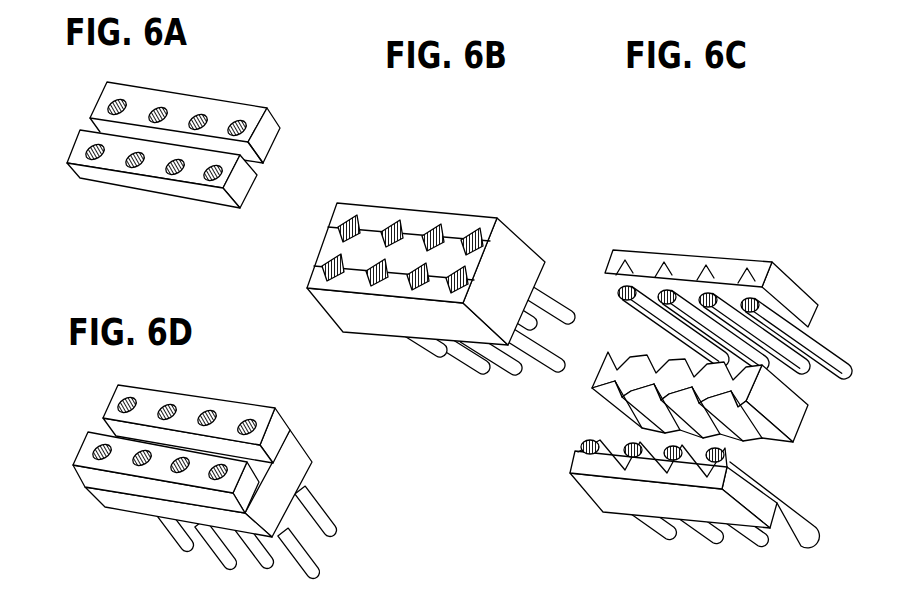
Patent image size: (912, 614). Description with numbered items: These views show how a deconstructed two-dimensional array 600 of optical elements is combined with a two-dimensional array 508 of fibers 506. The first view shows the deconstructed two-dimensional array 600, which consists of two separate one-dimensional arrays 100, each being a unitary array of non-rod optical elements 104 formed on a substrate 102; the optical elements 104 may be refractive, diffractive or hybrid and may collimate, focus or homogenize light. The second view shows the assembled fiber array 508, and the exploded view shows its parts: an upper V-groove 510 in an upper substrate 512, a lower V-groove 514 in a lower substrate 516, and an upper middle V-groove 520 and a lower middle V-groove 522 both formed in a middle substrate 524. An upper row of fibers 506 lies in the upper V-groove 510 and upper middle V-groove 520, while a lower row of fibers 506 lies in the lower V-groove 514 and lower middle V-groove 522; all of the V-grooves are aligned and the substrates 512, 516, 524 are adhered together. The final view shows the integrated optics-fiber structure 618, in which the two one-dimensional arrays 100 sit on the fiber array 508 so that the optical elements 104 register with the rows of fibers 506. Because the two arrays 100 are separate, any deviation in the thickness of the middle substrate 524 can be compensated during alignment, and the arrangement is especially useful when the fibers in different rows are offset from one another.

In FIG. 6A, the one-dimensional array 100 is at (188, 133).
In FIG. 6A, the substrate 102 is at (107, 97).
In FIG. 6A, the non-rod optical elements 104 is at (120, 98).
In FIG. 6A, the deconstructed two-dimensional array 600 is at (190, 133).
In FIG. 6D, the deconstructed two-dimensional array 600 is at (190, 476).
In FIG. 6B, the fibers 506 is at (535, 297).
In FIG. 6C, the fibers 506 is at (825, 358).
In FIG. 6B, the two-dimensional array of fibers 508 is at (415, 262).
In FIG. 6C, the two-dimensional array of fibers 508 is at (702, 378).
In FIG. 6D, the two-dimensional array of fibers 508 is at (300, 427).
In FIG. 6B, the upper V-groove 510 is at (473, 222).
In FIG. 6C, the upper V-groove 510 is at (623, 270).
In FIG. 6B, the upper substrate 512 is at (376, 226).
In FIG. 6C, the upper substrate 512 is at (711, 262).
In FIG. 6B, the lower V-groove 514 is at (374, 312).
In FIG. 6C, the lower V-groove 514 is at (679, 499).
In FIG. 6B, the lower substrate 516 is at (348, 317).
In FIG. 6C, the lower substrate 516 is at (628, 493).
In FIG. 6B, the upper middle V-groove 520 is at (340, 242).
In FIG. 6C, the upper middle V-groove 520 is at (612, 352).
In FIG. 6B, the lower middle V-groove 522 is at (327, 267).
In FIG. 6C, the lower middle V-groove 522 is at (702, 374).
In FIG. 6B, the middle substrate 524 is at (521, 298).
In FIG. 6C, the middle substrate 524 is at (790, 429).
In FIG. 6D, the integrated optics-fiber structure 618 is at (100, 400).